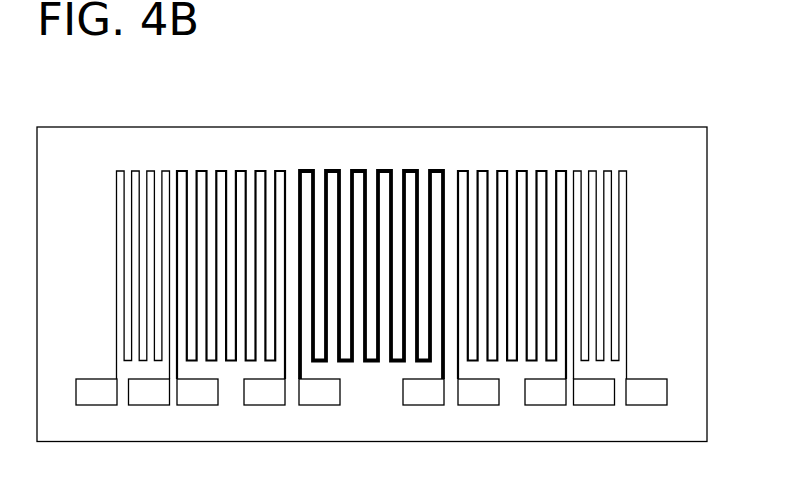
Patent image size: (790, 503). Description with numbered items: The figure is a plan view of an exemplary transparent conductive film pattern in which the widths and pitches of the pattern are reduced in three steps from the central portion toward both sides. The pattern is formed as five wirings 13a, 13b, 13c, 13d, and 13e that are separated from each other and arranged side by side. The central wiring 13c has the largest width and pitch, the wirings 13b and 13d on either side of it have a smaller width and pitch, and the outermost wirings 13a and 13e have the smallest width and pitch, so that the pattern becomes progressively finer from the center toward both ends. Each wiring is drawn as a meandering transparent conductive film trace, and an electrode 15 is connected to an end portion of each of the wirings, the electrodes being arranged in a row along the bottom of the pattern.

The wiring 13a is at (154, 160).
The wiring 13b is at (233, 160).
The wiring 13c is at (367, 160).
The wiring 13d is at (508, 160).
The wiring 13e is at (600, 160).
The electrode 15 is at (96, 405).